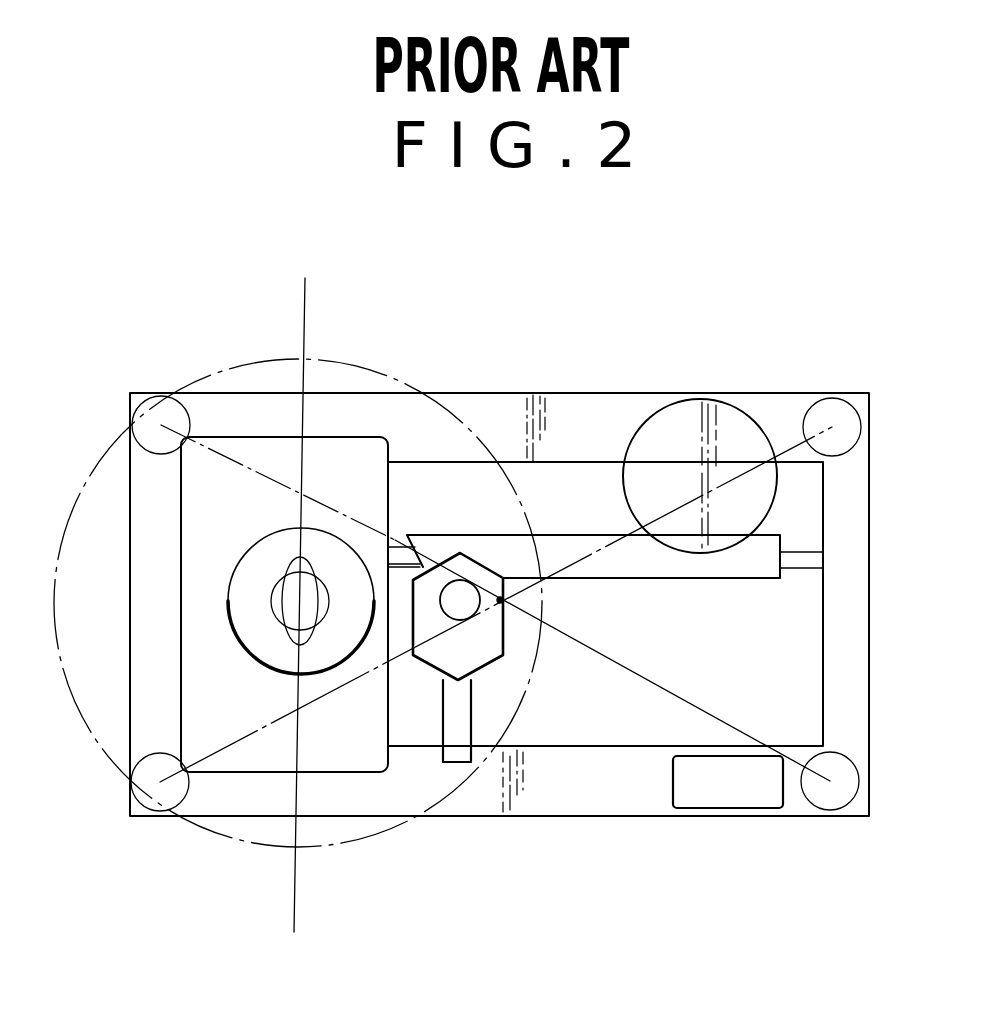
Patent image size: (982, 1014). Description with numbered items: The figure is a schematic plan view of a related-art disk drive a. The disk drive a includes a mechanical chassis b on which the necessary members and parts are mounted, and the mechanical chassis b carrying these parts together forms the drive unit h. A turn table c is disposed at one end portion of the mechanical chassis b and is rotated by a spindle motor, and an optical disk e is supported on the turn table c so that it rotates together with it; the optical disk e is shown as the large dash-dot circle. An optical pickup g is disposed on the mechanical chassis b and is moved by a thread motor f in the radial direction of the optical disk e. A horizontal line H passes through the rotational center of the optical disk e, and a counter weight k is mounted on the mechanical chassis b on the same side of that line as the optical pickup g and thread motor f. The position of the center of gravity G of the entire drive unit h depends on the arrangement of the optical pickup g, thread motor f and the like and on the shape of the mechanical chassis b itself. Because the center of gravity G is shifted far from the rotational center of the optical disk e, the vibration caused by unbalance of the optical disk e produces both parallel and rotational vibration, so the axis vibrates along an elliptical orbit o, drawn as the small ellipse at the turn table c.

The disk drive a is at (518, 332).
The mechanical chassis b is at (770, 408).
The turn table c is at (327, 672).
The optical disk e is at (255, 362).
The thread motor f is at (688, 420).
The optical pickup g is at (493, 652).
The center of gravity G is at (500, 600).
The drive unit h is at (562, 808).
The counter weight k is at (722, 797).
The elliptical orbit o is at (285, 637).
The horizontal line H is at (301, 608).